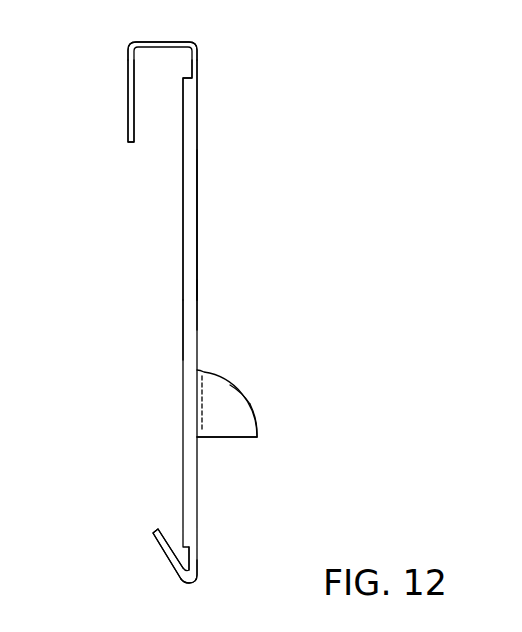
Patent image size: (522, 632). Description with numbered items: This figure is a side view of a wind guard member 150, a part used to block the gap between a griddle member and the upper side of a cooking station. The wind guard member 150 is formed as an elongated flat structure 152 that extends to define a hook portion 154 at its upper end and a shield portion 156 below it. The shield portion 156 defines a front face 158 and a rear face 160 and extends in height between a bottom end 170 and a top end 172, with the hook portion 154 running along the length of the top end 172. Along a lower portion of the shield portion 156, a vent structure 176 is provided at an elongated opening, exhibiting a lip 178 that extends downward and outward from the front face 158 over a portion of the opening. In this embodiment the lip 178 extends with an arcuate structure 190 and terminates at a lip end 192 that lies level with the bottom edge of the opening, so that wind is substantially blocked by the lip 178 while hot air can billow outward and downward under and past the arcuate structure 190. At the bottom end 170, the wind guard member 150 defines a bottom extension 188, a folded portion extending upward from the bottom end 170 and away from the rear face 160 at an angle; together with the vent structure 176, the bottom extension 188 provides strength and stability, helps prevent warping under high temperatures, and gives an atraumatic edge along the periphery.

The wind guard member 150 is at (252, 62).
The elongated flat structure 152 is at (205, 147).
The hook portion 154 is at (127, 84).
The shield portion 156 is at (196, 229).
The front face 158 is at (197, 300).
The rear face 160 is at (183, 330).
The bottom end 170 is at (188, 583).
The top end 172 is at (173, 42).
The vent structure 176 is at (242, 383).
The lip 178 is at (257, 430).
The bottom extension 188 is at (156, 541).
The arcuate structure 190 is at (250, 404).
The lip end 192 is at (257, 438).